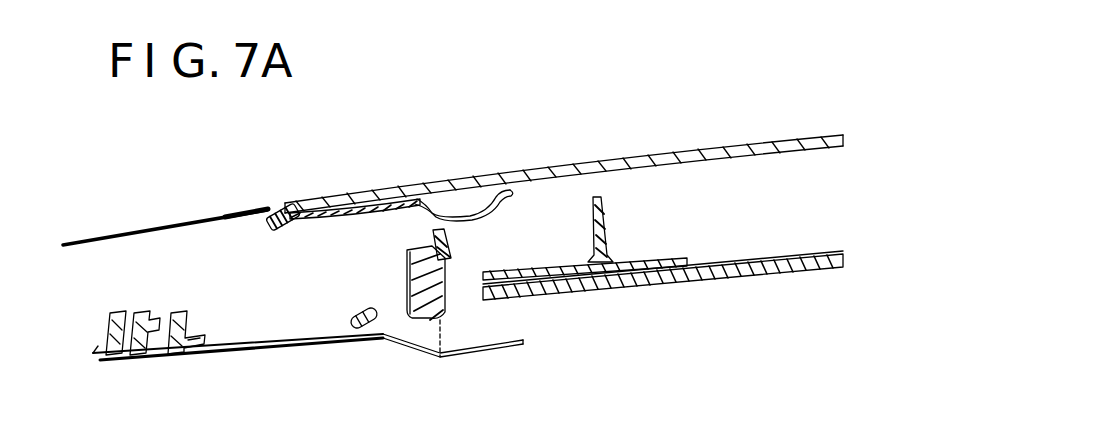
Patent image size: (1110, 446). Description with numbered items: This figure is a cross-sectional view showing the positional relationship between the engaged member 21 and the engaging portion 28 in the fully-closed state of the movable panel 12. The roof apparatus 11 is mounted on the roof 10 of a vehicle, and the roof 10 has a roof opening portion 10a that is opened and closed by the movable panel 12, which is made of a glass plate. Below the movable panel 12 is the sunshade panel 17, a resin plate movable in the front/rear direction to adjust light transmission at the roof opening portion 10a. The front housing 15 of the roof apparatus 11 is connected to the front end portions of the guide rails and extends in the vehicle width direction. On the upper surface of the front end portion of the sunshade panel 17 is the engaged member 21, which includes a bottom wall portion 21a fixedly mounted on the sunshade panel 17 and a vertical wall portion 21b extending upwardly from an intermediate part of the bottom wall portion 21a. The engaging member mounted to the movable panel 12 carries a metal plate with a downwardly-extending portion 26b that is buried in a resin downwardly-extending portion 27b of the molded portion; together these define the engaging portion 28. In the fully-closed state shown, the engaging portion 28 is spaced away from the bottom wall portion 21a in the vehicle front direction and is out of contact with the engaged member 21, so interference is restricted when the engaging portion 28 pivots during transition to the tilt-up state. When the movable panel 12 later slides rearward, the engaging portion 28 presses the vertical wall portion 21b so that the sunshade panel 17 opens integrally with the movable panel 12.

The roof 10 is at (182, 219).
The roof opening portion 10a is at (270, 210).
The roof apparatus 11 is at (540, 135).
The movable panel 12 is at (619, 160).
The front housing 15 is at (360, 327).
The sunshade panel 17 is at (770, 279).
The engaged member 21 is at (662, 258).
The bottom wall portion 21a is at (630, 288).
The vertical wall portion 21b is at (611, 212).
The downwardly-extending portion 26b is at (440, 304).
The downwardly-extending portion 27b is at (447, 248).
The engaging portion 28 is at (440, 357).